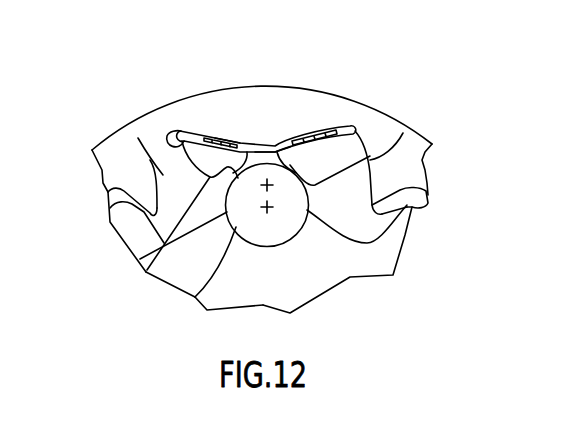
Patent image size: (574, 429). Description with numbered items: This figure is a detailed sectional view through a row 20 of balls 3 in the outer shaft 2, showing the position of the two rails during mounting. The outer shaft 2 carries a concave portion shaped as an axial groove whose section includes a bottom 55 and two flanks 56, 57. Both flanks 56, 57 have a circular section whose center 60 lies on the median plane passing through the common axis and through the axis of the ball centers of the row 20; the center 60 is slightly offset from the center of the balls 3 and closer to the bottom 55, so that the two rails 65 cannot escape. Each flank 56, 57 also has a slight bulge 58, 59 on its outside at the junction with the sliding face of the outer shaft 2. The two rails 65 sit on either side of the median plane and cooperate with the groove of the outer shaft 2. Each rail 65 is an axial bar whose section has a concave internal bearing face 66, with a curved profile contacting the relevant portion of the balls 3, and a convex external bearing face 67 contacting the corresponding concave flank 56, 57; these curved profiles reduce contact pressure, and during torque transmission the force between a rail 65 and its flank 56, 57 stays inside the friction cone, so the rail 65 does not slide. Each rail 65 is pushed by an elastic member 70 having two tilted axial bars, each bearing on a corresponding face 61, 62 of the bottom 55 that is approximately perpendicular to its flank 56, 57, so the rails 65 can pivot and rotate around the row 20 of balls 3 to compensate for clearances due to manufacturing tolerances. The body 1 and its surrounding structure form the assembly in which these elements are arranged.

The rotor body 1 is at (350, 252).
The outer shaft 2 is at (378, 133).
The balls 3 is at (283, 230).
The row of balls 20 is at (197, 298).
The bottom 55 is at (268, 146).
The flank 56 is at (138, 138).
The flank 57 is at (403, 133).
The bulge 58 is at (109, 209).
The bulge 59 is at (422, 208).
The center 60 is at (272, 178).
The face of the bottom 61 is at (315, 130).
The face of the bottom 62 is at (201, 141).
The rail 65 is at (203, 157).
The internal bearing face 66 is at (140, 259).
The external bearing face 67 is at (150, 160).
The elastic member 70 is at (238, 142).